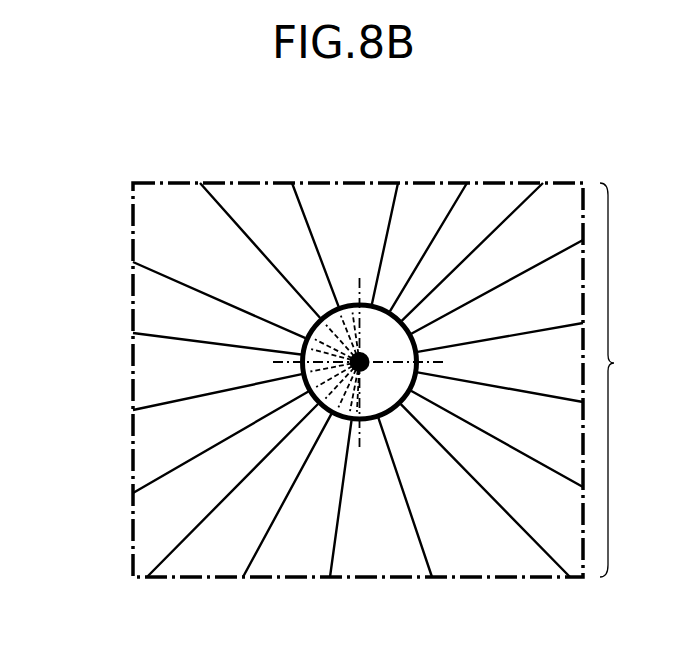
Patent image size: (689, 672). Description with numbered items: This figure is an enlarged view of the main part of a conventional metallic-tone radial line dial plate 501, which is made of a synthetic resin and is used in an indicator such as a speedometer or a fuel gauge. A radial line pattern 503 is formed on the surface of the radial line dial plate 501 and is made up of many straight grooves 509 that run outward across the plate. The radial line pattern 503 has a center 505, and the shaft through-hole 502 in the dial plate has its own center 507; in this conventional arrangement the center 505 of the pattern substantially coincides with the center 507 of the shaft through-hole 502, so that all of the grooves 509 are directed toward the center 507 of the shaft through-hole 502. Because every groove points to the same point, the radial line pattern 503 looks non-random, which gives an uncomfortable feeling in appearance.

The radial line dial plate 501 is at (124, 198).
The shaft through-hole 502 is at (413, 383).
The radial line pattern 503 is at (633, 380).
The center of the radial line pattern 505 is at (371, 305).
The center of the shaft through-hole 507 is at (352, 261).
The grooves 509 is at (155, 340).